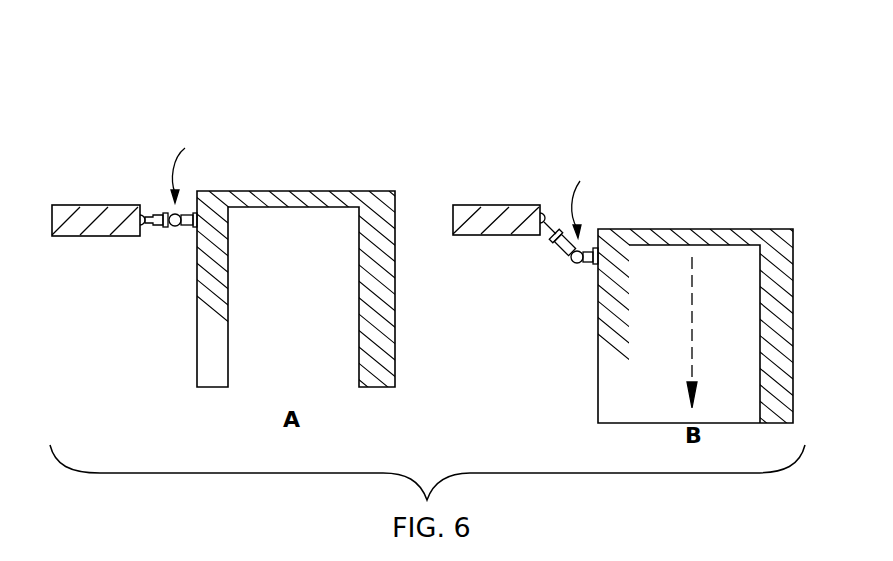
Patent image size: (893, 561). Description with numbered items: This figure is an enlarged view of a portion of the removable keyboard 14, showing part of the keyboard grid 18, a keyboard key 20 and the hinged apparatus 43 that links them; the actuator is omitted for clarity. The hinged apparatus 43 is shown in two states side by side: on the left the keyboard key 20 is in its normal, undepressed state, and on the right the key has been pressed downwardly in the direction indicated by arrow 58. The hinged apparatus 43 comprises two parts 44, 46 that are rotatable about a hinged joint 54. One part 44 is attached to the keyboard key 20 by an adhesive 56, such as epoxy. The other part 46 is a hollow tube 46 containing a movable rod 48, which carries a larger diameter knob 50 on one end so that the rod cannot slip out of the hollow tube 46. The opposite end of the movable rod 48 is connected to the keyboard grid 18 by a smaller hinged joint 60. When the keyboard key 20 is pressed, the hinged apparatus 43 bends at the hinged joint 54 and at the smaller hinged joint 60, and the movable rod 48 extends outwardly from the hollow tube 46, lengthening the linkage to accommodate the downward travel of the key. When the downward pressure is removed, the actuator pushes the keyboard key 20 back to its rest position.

The removable keyboard 14 is at (100, 148).
The keyboard grid 18 is at (98, 208).
The keyboard key 20 is at (305, 197).
The hinged apparatus 43 is at (387, 187).
The part of hinged apparatus 44 is at (188, 228).
The hollow tube 46 is at (155, 226).
The movable rod 48 is at (158, 216).
The larger diameter knob 50 is at (166, 213).
The hinged joint 54 is at (175, 228).
The adhesive 56 is at (192, 213).
The arrow 58 is at (693, 323).
The smaller hinged joint 60 is at (143, 210).